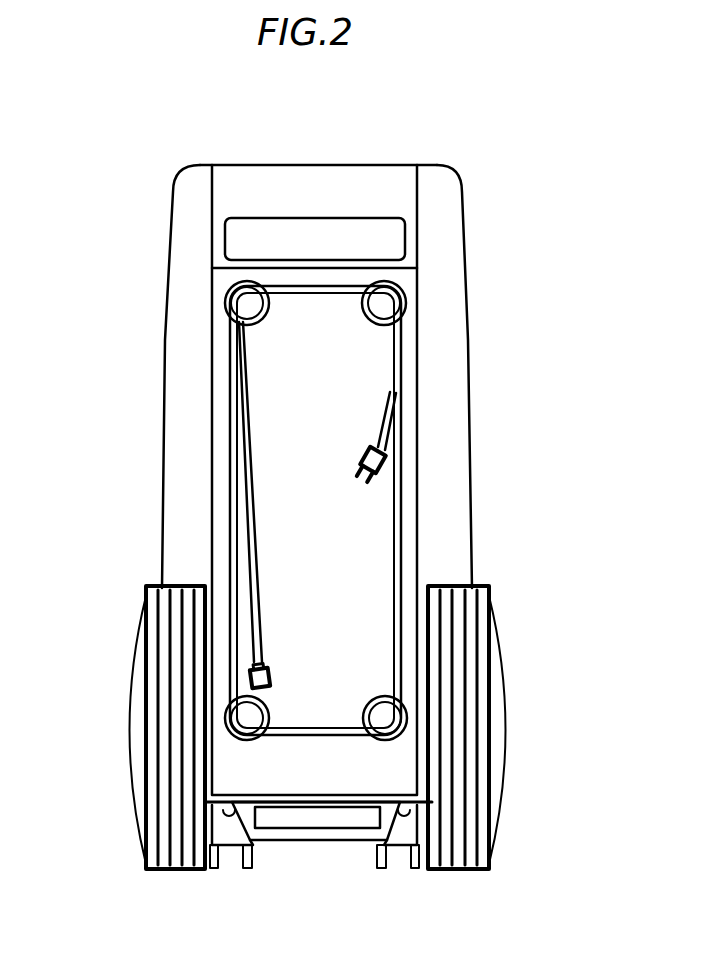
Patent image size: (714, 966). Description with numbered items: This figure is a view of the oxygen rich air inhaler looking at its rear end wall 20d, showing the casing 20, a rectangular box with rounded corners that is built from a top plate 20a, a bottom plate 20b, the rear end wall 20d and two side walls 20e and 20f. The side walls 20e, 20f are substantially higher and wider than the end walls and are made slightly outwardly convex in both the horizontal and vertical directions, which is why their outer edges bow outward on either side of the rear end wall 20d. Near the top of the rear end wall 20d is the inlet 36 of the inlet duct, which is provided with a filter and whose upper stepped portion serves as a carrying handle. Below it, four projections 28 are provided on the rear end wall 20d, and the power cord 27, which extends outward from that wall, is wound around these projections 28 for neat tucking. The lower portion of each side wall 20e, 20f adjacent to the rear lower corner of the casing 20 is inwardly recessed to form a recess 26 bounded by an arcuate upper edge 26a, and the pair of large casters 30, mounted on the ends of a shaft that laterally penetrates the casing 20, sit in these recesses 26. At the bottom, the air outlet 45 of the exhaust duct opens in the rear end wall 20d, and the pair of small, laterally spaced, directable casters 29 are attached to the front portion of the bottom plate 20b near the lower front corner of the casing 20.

The casing 20 is at (308, 440).
The top plate 20a is at (250, 165).
The bottom plate 20b is at (320, 841).
The rear end wall 20d is at (413, 515).
The side wall 20e is at (162, 395).
The side wall 20f is at (470, 385).
The recess 26 is at (315, 709).
The arcuate upper edge 26a is at (192, 590).
The power cord 27 is at (401, 458).
The projections 28 is at (393, 300).
The small casters 29 is at (241, 864).
The large casters 30 is at (142, 820).
The inlet 36 is at (226, 233).
The air outlet 45 is at (289, 826).